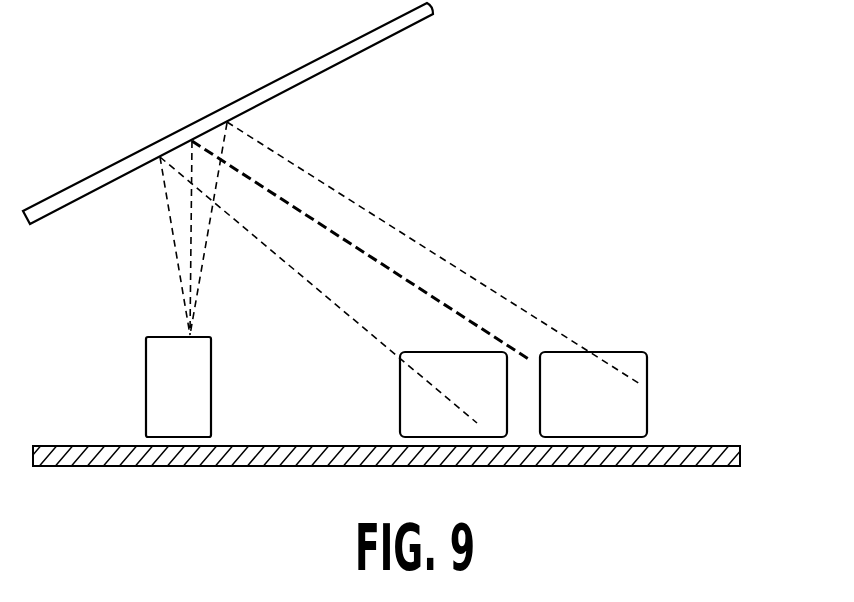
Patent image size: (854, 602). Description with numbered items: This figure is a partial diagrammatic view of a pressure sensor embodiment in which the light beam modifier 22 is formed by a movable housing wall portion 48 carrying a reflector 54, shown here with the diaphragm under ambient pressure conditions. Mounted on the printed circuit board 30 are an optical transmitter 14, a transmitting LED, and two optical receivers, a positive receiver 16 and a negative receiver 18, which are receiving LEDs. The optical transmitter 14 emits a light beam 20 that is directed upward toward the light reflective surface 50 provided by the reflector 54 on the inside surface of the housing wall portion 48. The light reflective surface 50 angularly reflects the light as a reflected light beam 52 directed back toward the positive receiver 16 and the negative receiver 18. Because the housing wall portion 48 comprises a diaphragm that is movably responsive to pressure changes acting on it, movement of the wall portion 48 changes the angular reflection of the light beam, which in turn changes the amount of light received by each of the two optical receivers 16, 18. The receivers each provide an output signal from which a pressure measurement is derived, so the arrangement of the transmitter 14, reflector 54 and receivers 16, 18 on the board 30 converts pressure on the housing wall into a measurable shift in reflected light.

The optical transmitter 14 is at (177, 390).
The positive receiver 16 is at (450, 382).
The negative receiver 18 is at (603, 383).
The light beam 20 is at (188, 262).
The light beam modifier 22 is at (368, 80).
The printed circuit board 30 is at (700, 446).
The housing wall portion 48 is at (430, 6).
The light reflective surface 50 is at (260, 103).
The reflected light beam 52 is at (445, 303).
The reflector 54 is at (100, 188).